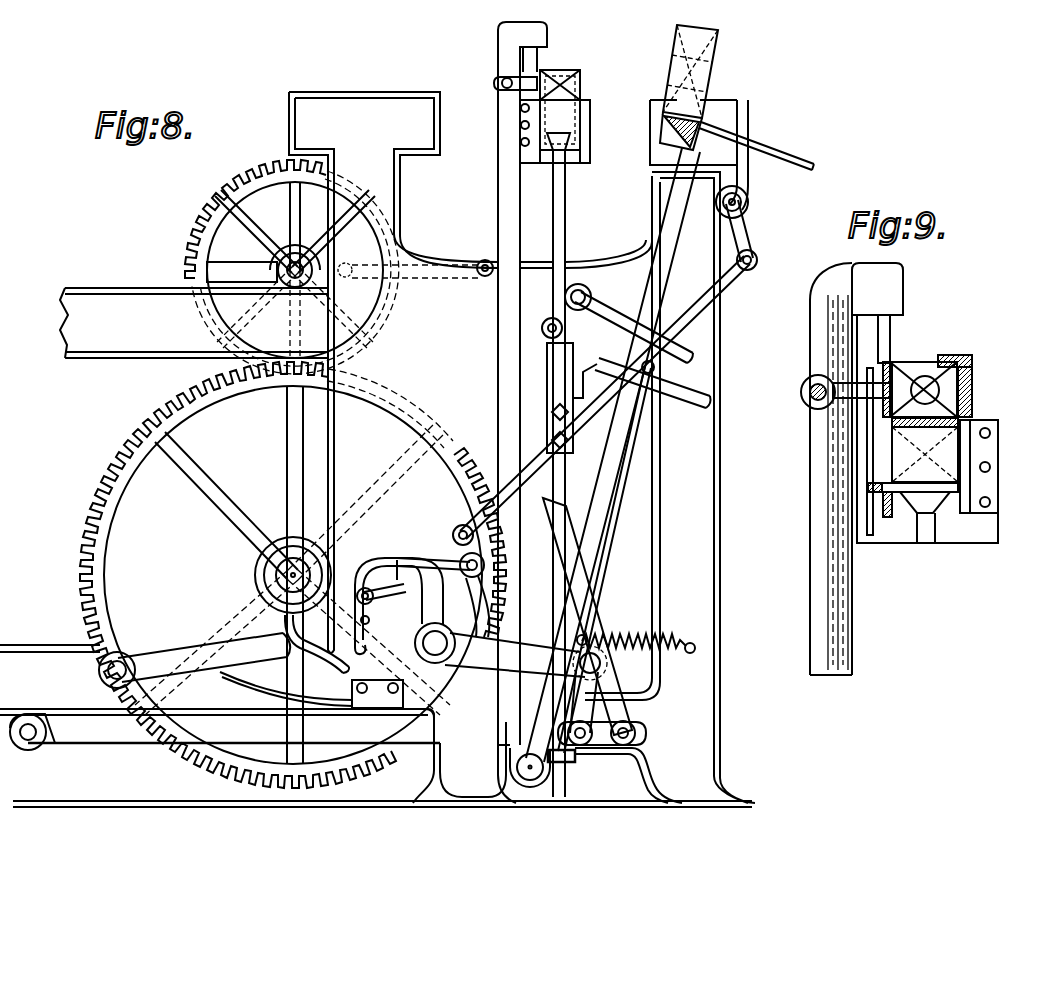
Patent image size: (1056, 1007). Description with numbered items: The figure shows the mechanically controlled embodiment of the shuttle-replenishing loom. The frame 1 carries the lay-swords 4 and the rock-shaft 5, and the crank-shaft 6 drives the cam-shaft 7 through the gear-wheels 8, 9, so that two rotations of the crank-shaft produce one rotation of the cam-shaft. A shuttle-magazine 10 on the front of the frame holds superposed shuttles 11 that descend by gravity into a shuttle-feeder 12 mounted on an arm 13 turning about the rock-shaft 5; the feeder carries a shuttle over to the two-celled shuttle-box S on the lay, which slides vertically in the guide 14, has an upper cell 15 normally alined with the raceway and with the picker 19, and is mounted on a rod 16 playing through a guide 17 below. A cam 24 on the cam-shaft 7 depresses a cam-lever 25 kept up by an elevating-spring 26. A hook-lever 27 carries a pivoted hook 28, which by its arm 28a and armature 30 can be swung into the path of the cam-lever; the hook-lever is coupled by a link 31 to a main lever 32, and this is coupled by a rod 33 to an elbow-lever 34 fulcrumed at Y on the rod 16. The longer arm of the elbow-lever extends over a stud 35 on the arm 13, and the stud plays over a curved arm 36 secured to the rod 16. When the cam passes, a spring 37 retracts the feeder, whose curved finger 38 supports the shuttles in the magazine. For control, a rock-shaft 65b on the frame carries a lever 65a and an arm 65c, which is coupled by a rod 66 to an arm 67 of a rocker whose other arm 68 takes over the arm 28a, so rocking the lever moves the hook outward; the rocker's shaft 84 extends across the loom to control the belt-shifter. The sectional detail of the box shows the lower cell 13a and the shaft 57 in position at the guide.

In FIG. 8, the frame 1 is at (362, 93).
In FIG. 8, the lay-swords 4 is at (520, 233).
In FIG. 9, the lay-swords 4 is at (810, 566).
In FIG. 8, the rock-shaft 5 is at (526, 767).
In FIG. 8, the crank-shaft 6 is at (293, 278).
In FIG. 8, the cam-shaft 7 is at (293, 575).
In FIG. 8, the gear-wheel 8 is at (195, 228).
In FIG. 8, the gear-wheel 9 is at (118, 462).
In FIG. 8, the shuttle-magazine 10 is at (712, 84).
In FIG. 9, the shuttles 11 is at (920, 370).
In FIG. 8, the shuttle-feeder 12 is at (660, 140).
In FIG. 8, the arm 13 is at (660, 313).
In FIG. 9, the lower block 13a is at (925, 450).
In FIG. 8, the guide 14 is at (592, 146).
In FIG. 9, the guide 14 is at (998, 492).
In FIG. 9, the upper shuttle-cell 15 is at (972, 362).
In FIG. 8, the rod 16 is at (575, 465).
In FIG. 9, the rod 16 is at (925, 540).
In FIG. 8, the guide 17 is at (578, 760).
In FIG. 9, the picker 19 is at (925, 390).
In FIG. 8, the cam 24 is at (262, 590).
In FIG. 8, the cam-lever 25 is at (205, 660).
In FIG. 8, the elevating-spring 26 is at (272, 686).
In FIG. 8, the hook-lever 27 is at (402, 566).
In FIG. 8, the hook 28 is at (415, 630).
In FIG. 8, the arm 28a is at (378, 600).
In FIG. 8, the armature 30 is at (445, 640).
In FIG. 8, the link 31 is at (592, 706).
In FIG. 8, the main lever 32 is at (220, 729).
In FIG. 8, the link or rod 33 is at (548, 395).
In FIG. 8, the elbow-lever 34 is at (650, 325).
In FIG. 8, the stud 35 is at (660, 370).
In FIG. 8, the curved arm 36 is at (683, 402).
In FIG. 8, the spring 37 is at (665, 640).
In FIG. 8, the curved supporting plate or finger 38 is at (790, 150).
In FIG. 8, the shaft 57 is at (520, 62).
In FIG. 9, the shaft 57 is at (890, 346).
In FIG. 8, the lever 65a is at (752, 112).
In FIG. 8, the rock-shaft 65b is at (750, 202).
In FIG. 8, the arm 65c is at (755, 236).
In FIG. 8, the rod or link 66 is at (722, 298).
In FIG. 8, the arm 67 is at (475, 538).
In FIG. 8, the arm 68 is at (445, 560).
In FIG. 8, the shaft 84 is at (486, 565).
In FIG. 8, the shuttle-box S is at (537, 93).
In FIG. 9, the shuttle-box S is at (938, 321).
In FIG. 8, the fulcrum Y is at (593, 296).